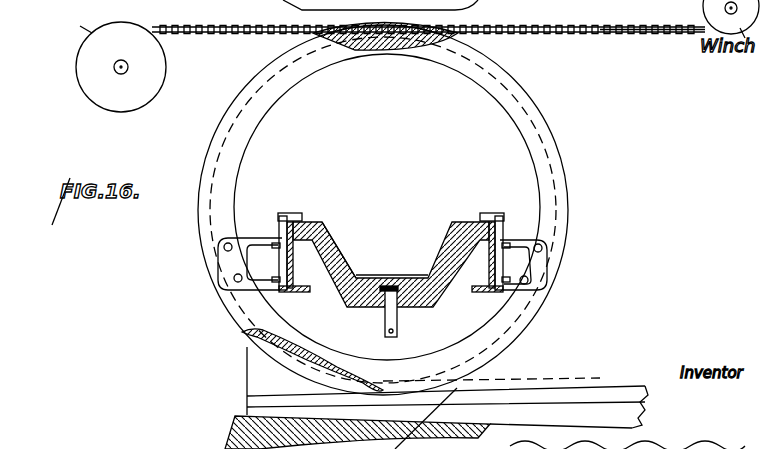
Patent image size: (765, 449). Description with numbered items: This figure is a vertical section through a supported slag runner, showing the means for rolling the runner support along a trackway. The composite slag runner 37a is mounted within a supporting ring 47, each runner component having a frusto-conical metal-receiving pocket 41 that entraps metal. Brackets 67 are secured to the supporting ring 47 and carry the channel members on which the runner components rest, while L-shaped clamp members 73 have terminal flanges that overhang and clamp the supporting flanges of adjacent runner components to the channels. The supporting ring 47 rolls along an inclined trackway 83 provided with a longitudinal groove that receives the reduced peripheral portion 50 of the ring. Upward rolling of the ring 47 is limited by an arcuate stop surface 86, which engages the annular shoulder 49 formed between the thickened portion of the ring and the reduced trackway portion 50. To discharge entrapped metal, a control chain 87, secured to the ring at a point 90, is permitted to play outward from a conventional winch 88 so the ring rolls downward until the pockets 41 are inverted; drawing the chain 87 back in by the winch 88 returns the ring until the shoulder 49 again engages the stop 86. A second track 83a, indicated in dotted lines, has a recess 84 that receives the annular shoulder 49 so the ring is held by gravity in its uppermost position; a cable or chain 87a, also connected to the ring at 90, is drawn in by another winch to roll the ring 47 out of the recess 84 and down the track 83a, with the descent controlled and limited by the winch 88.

The composite slag runner 37a is at (438, 237).
The metal-receiving pocket 41 is at (350, 298).
The supporting ring 47 is at (523, 131).
The annular shoulder 49 is at (369, 315).
The peripheral portion of supporting ring 50 is at (567, 193).
The bracket 67 is at (232, 258).
The L-shaped clamp member 73 is at (279, 220).
The inclined trackway 83 is at (573, 385).
The track 83a is at (533, 378).
The recess 84 is at (423, 375).
The arcuate stop surface 86 is at (285, 355).
The control chain 87 is at (197, 27).
The cable or chain 87a is at (623, 33).
The winch 88 is at (135, 98).
The chain connection point 90 is at (386, 35).